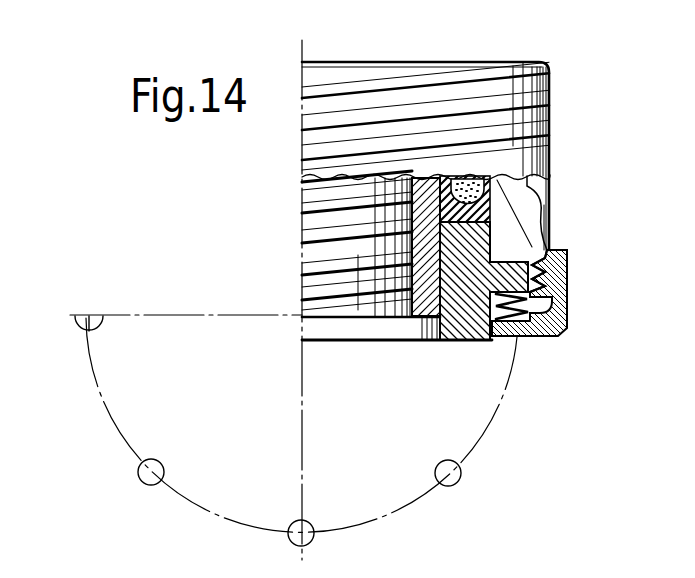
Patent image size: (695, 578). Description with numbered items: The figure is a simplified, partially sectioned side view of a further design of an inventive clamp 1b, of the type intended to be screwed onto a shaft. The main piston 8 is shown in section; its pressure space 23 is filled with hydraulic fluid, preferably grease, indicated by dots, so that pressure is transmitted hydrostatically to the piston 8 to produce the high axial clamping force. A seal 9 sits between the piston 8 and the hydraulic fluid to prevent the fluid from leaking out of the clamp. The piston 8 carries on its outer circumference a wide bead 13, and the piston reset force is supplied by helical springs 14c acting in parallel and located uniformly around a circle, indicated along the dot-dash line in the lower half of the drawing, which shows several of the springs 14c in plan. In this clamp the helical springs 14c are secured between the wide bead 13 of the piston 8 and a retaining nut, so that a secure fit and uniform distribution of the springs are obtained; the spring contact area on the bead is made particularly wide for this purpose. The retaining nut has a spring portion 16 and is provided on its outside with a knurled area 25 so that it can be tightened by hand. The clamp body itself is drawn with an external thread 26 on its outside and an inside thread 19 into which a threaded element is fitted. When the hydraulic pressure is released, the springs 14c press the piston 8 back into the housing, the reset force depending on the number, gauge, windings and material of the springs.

The clamp 1b is at (493, 121).
The external thread 26 is at (552, 78).
The inside thread 19 is at (409, 268).
The seal 9 is at (448, 188).
The pressure space 23 is at (476, 182).
The piston 8 is at (480, 240).
The knurled area 25 is at (568, 291).
The bead 13 is at (518, 277).
The spring portion 16 is at (521, 338).
The helical springs 14c is at (82, 328).